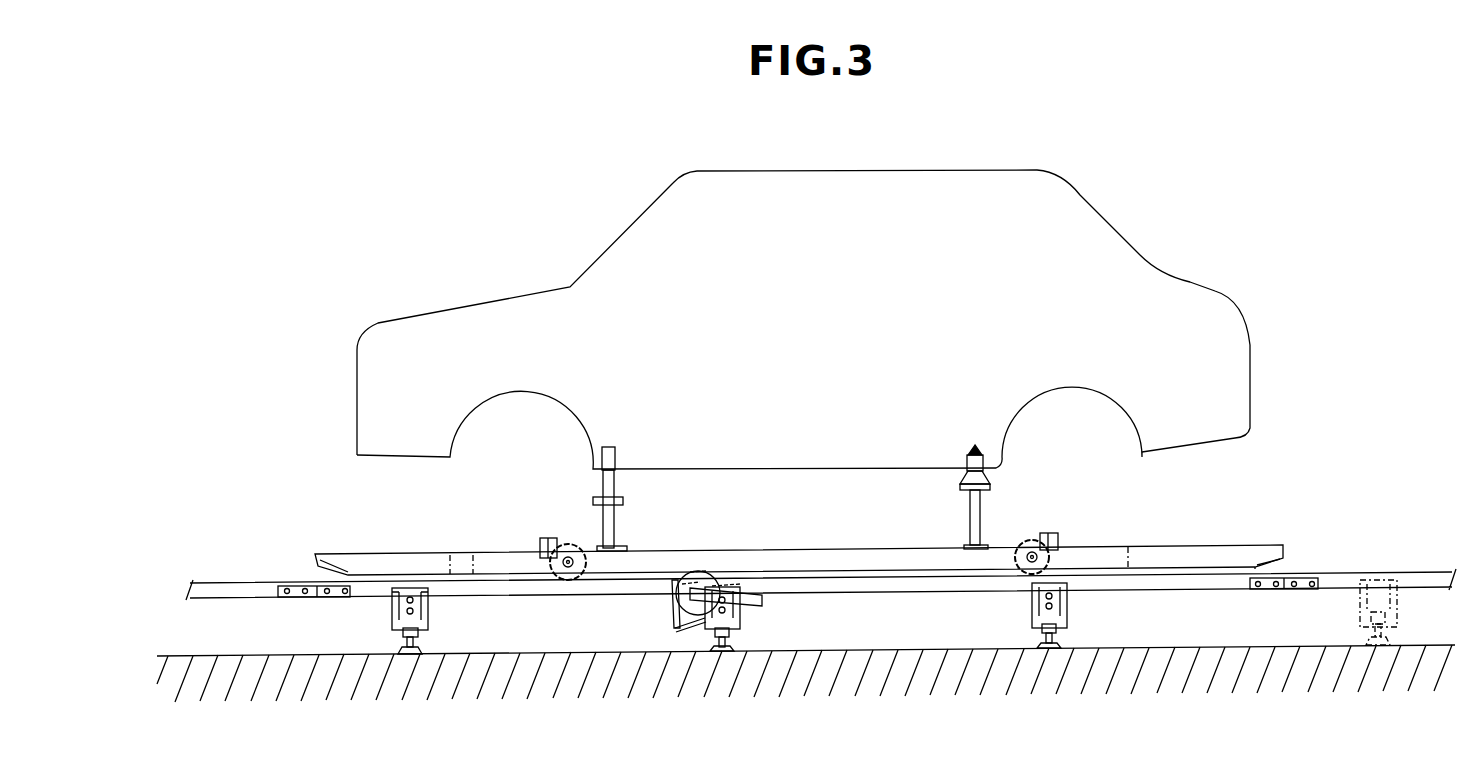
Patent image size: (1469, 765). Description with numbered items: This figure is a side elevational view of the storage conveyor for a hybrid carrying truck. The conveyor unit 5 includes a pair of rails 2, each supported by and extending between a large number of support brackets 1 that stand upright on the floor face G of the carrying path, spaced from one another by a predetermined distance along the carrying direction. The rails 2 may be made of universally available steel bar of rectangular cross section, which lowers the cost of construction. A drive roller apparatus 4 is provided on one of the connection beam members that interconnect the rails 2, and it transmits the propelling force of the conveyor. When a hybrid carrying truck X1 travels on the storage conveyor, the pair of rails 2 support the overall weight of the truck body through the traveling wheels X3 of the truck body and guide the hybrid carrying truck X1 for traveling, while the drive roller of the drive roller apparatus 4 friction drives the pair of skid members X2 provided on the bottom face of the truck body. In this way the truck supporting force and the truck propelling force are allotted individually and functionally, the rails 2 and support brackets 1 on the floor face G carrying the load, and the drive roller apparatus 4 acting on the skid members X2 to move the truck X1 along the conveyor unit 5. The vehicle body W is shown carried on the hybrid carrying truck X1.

The vehicle body W is at (897, 172).
The floor face G is at (1413, 673).
The support bracket 1 is at (742, 617).
The rail 2 is at (895, 590).
The drive roller apparatus 4 is at (677, 598).
The conveyor unit 5 is at (262, 606).
The hybrid carrying truck X1 is at (992, 512).
The skid member X2 is at (1230, 550).
The traveling wheel X3 is at (565, 542).